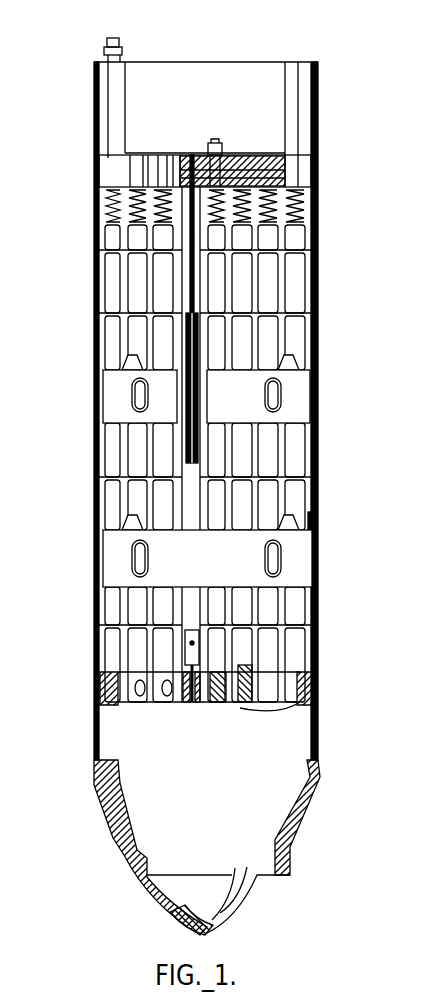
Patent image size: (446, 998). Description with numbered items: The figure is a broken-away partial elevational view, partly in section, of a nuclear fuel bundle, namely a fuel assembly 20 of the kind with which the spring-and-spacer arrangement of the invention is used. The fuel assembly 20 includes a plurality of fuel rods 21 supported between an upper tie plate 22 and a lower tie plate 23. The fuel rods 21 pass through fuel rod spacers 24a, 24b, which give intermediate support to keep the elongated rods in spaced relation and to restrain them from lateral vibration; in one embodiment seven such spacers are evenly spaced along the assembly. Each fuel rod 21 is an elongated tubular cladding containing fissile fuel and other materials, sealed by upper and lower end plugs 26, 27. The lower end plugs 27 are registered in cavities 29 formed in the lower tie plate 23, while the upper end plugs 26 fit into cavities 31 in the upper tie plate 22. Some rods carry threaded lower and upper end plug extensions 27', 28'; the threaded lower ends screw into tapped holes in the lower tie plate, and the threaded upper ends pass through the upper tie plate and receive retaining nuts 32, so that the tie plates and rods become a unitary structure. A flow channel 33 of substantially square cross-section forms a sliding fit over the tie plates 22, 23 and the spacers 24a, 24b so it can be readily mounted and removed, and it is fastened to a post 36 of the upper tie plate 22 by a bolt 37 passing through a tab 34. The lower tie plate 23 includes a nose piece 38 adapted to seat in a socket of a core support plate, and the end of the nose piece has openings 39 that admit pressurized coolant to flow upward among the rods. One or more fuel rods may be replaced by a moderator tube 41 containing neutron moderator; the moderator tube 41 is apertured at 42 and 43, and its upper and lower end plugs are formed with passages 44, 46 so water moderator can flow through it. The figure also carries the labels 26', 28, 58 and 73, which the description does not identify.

The fuel assembly 20 is at (349, 122).
The fuel rods 21 is at (316, 335).
The upper tie plate 22 is at (110, 190).
The lower tie plate 23 is at (103, 702).
The fuel rod spacer 24a is at (314, 580).
The fuel rod spacer 24b is at (314, 418).
The upper end plugs 26 is at (327, 241).
The tube segment 26' is at (329, 283).
The lower end plugs 27 is at (244, 668).
The threaded lower end plug extension 27' is at (299, 734).
The spring 28 is at (328, 209).
The threaded upper end plug extension 28' is at (315, 195).
The cavities 29 is at (293, 710).
The cavities 31 is at (290, 163).
The retaining nuts 32 is at (222, 153).
The flow channel 33 is at (314, 525).
The tab 34 is at (106, 56).
The post 36 is at (107, 140).
The bolt 37 is at (122, 55).
The nose piece 38 is at (300, 812).
The openings 39 is at (178, 890).
The moderator tube 41 is at (200, 462).
The aperture 42 is at (188, 645).
The aperture 43 is at (128, 240).
The passage 44 is at (193, 158).
The passage 46 is at (194, 707).
The flared tube portion 58 is at (300, 370).
The seal 73 is at (186, 706).